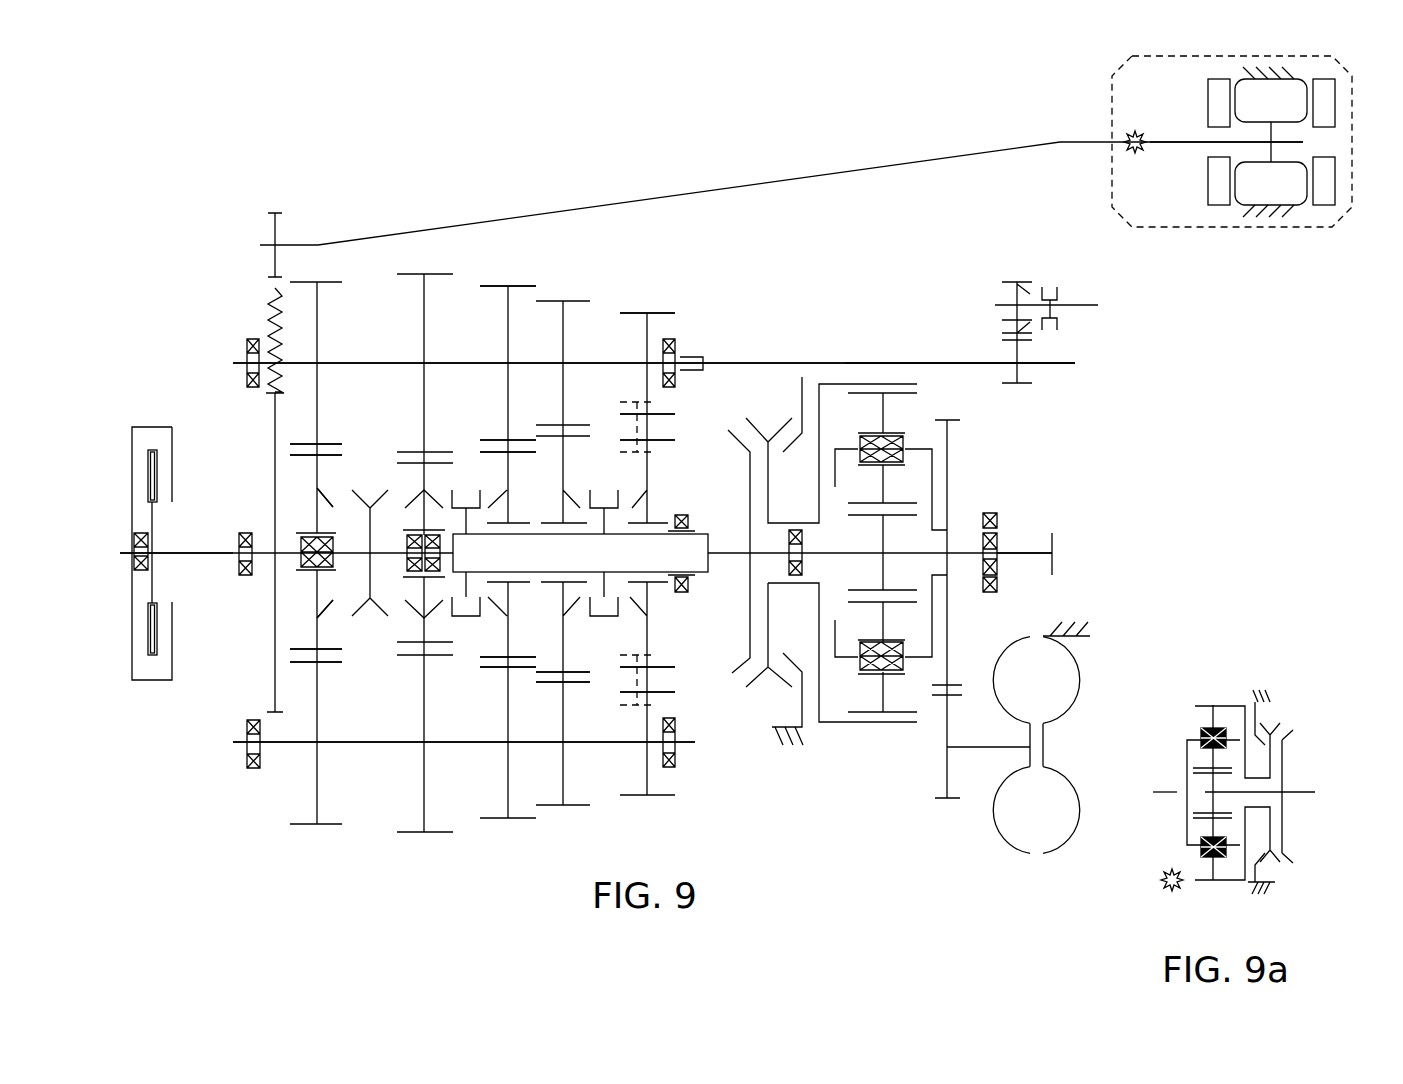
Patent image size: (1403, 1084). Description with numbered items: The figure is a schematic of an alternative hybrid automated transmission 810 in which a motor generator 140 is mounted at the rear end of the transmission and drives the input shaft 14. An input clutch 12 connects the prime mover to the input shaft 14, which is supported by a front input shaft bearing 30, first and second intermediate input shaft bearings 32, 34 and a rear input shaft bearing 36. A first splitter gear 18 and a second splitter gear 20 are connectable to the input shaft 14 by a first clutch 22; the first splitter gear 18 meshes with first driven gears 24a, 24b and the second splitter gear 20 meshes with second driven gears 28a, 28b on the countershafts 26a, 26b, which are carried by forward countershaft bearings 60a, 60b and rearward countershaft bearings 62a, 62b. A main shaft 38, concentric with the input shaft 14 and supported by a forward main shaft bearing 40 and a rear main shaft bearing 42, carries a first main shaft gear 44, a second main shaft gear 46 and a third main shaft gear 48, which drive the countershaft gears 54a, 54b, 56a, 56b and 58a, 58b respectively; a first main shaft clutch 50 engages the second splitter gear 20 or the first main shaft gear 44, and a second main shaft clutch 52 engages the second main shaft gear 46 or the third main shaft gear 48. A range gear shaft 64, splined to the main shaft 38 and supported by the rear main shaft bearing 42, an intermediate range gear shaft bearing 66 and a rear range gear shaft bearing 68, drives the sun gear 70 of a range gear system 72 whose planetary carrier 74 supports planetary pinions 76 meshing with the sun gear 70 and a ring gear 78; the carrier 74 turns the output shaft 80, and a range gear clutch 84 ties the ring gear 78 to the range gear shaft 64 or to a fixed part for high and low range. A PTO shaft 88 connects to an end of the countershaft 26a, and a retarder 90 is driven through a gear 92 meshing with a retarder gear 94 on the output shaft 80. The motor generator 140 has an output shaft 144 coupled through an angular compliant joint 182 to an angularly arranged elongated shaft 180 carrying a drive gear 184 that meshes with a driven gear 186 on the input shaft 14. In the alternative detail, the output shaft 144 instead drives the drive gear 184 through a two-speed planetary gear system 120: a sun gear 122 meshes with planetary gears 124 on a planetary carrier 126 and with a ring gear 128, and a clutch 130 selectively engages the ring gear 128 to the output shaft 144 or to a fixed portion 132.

In FIG. 9, the input clutch 12 is at (139, 708).
In FIG. 9, the input shaft 14 is at (221, 552).
In FIG. 9, the first splitter gear 18 is at (317, 632).
In FIG. 9, the second splitter gear 20 is at (423, 622).
In FIG. 9, the first clutch 22 is at (373, 452).
In FIG. 9, the first driven gear 24a is at (318, 318).
In FIG. 9, the first driven gear 24b is at (317, 790).
In FIG. 9, the countershaft 26a is at (437, 362).
In FIG. 9, the countershaft 26b is at (443, 745).
In FIG. 9, the second driven gear 28a is at (422, 323).
In FIG. 9, the second driven gear 28b is at (423, 785).
In FIG. 9, the front input shaft bearing 30 is at (148, 562).
In FIG. 9, the first intermediate input shaft bearing 32 is at (245, 578).
In FIG. 9, the second intermediate input shaft bearing 34 is at (302, 537).
In FIG. 9, the rear input shaft bearing 36 is at (407, 536).
In FIG. 9, the main shaft 38 is at (533, 534).
In FIG. 9, the forward main shaft bearing 40 is at (460, 562).
In FIG. 9, the rear main shaft bearing 42 is at (688, 518).
In FIG. 9, the first main shaft gear 44 is at (508, 625).
In FIG. 9, the second main shaft gear 46 is at (563, 650).
In FIG. 9, the third main shaft gear 48 is at (648, 633).
In FIG. 9, the first main shaft clutch 50 is at (472, 452).
In FIG. 9, the second main shaft clutch 52 is at (604, 462).
In FIG. 9, the third driven gear 54a is at (508, 297).
In FIG. 9, the third driven gear 54b is at (508, 805).
In FIG. 9, the third driven gear 56a is at (563, 322).
In FIG. 9, the third driven gear 56b is at (563, 786).
In FIG. 9, the third driven gear 58a is at (647, 328).
In FIG. 9, the third driven gear 58b is at (648, 778).
In FIG. 9, the forward countershaft bearing 60a is at (247, 345).
In FIG. 9, the forward countershaft bearing 60b is at (247, 762).
In FIG. 9, the rearward countershaft bearing 62a is at (673, 388).
In FIG. 9, the rearward countershaft bearing 62b is at (675, 730).
In FIG. 9, the range gear shaft 64 is at (873, 555).
In FIG. 9, the intermediate range gear shaft bearing 66 is at (802, 568).
In FIG. 9, the rear range gear shaft bearing 68 is at (997, 530).
In FIG. 9, the sun gear 70 is at (890, 517).
In FIG. 9, the range gear system 72 is at (864, 754).
In FIG. 9, the planetary carrier 74 is at (910, 455).
In FIG. 9, the planetary pinions 76 is at (903, 398).
In FIG. 9, the ring gear 78 is at (883, 376).
In FIG. 9, the output shaft 80 is at (1025, 556).
In FIG. 9, the range gear clutch 84 is at (761, 702).
In FIG. 9, the PTO shaft 88 is at (845, 363).
In FIG. 9, the retarder 90 is at (1024, 866).
In FIG. 9, the gear 92 is at (940, 800).
In FIG. 9, the retarder gear 94 is at (957, 683).
In FIG. 9a, the 2-speed planetary gear system 120 is at (1233, 688).
In FIG. 9a, the sun gear 122 is at (1200, 812).
In FIG. 9a, the planetary gears 124 is at (1210, 725).
In FIG. 9a, the planetary carrier 126 is at (1187, 760).
In FIG. 9a, the ring gear 128 is at (1222, 705).
In FIG. 9a, the clutch 130 is at (1280, 714).
In FIG. 9a, the fixed portion 132 is at (1255, 887).
In FIG. 9, the motor generator 140 is at (1268, 219).
In FIG. 9, the output shaft 144 is at (1187, 142).
In FIG. 9a, the output shaft 144 is at (1292, 795).
In FIG. 9, the elongated shaft 180 is at (800, 178).
In FIG. 9a, the elongated shaft 180 is at (1177, 792).
In FIG. 9, the angular compliant joint 182 is at (1128, 152).
In FIG. 9, the drive gear 184 is at (270, 262).
In FIG. 9, the driven gear 186 is at (272, 447).
In FIG. 9, the hybrid automated transmission 810 is at (682, 172).